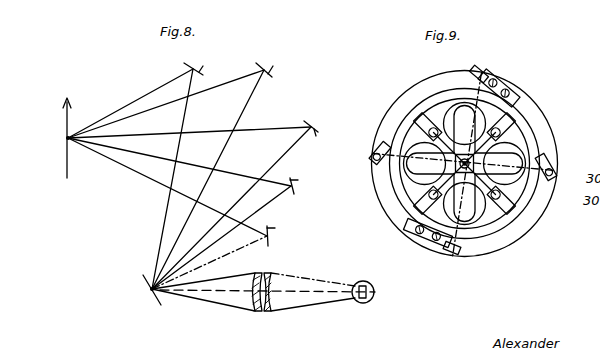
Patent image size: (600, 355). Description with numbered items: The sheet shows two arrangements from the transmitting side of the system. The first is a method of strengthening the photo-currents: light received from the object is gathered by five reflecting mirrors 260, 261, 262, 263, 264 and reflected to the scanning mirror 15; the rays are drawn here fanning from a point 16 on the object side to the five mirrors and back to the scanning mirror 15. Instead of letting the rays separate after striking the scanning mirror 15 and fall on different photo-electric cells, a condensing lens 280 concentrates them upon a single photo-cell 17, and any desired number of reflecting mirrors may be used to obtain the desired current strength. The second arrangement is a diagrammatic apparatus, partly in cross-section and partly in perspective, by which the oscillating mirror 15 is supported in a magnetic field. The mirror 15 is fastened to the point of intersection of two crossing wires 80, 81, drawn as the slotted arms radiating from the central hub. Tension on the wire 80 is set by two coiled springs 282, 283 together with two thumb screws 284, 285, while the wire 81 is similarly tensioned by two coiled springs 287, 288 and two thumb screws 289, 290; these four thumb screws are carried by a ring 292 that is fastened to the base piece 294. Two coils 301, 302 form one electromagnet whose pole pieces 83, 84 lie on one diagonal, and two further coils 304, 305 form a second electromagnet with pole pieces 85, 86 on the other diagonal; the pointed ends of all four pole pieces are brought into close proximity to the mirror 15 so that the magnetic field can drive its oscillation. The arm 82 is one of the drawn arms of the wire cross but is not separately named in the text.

In FIG. 8, the scanning mirror 15 is at (149, 294).
In FIG. 9, the scanning mirror 15 is at (465, 129).
In FIG. 8, the object point 16 is at (65, 140).
In FIG. 8, the photo-cell 17 is at (375, 292).
In FIG. 8, the reflecting mirror 260 is at (204, 64).
In FIG. 8, the reflecting mirror 261 is at (278, 66).
In FIG. 8, the reflecting mirror 262 is at (320, 122).
In FIG. 8, the reflecting mirror 263 is at (307, 186).
In FIG. 8, the reflecting mirror 264 is at (284, 236).
In FIG. 8, the condensing lens 280 is at (259, 310).
In FIG. 9, the wire 80 is at (465, 199).
In FIG. 9, the wire 81 is at (500, 164).
In FIG. 9, the slot arm 82 is at (429, 164).
In FIG. 9, the pole piece 83 is at (395, 117).
In FIG. 9, the pole piece 84 is at (530, 207).
In FIG. 9, the pole piece 85 is at (408, 237).
In FIG. 9, the pole piece 86 is at (519, 108).
In FIG. 9, the coiled spring 282 is at (534, 128).
In FIG. 9, the coiled spring 283 is at (397, 190).
In FIG. 9, the thumb screw 284 is at (370, 155).
In FIG. 9, the thumb screw 285 is at (556, 165).
In FIG. 9, the coiled spring 287 is at (476, 82).
In FIG. 9, the coiled spring 288 is at (514, 240).
In FIG. 9, the thumb screw 289 is at (456, 256).
In FIG. 9, the thumb screw 290 is at (492, 78).
In FIG. 9, the ring 292 is at (410, 108).
In FIG. 9, the base piece 294 is at (533, 111).
In FIG. 9, the electromagnet coil 301 is at (540, 195).
In FIG. 9, the electromagnet coil 302 is at (388, 167).
In FIG. 9, the electromagnet coil 304 is at (470, 252).
In FIG. 9, the electromagnet coil 305 is at (442, 112).